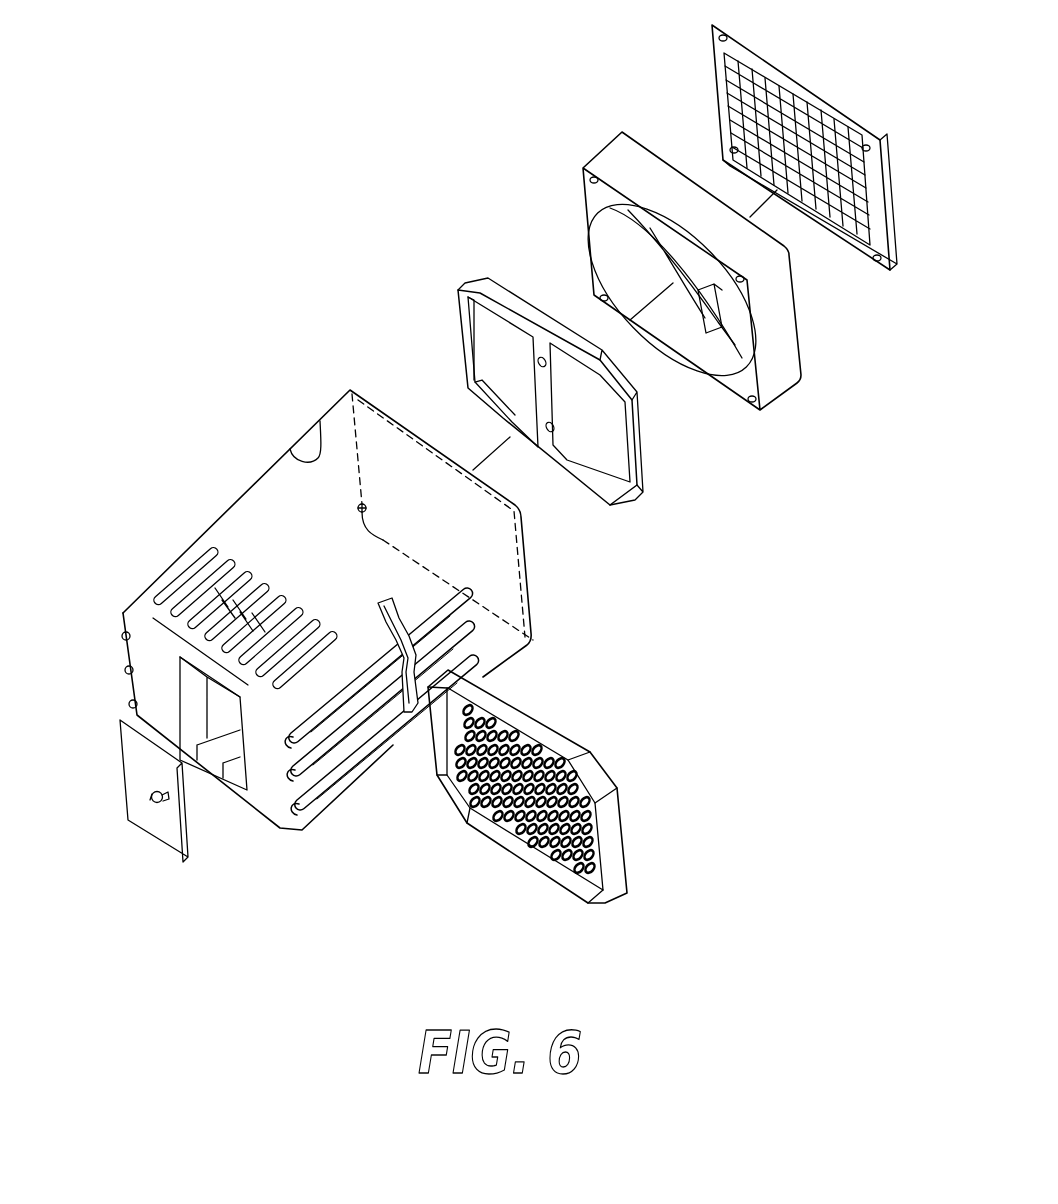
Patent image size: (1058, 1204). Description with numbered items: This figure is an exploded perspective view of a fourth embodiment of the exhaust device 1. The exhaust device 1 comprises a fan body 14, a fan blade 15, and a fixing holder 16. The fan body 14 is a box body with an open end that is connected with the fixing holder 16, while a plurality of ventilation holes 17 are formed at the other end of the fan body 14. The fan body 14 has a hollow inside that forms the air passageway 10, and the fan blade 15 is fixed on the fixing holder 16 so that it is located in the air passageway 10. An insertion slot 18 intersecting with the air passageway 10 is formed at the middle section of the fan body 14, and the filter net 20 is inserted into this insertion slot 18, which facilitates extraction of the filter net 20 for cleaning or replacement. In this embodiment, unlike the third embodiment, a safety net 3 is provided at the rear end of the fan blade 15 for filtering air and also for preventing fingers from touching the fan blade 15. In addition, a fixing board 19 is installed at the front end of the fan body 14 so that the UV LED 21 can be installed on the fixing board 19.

The exhaust device 1 is at (257, 435).
The safety net 3 is at (722, 96).
The air passageway 10 is at (385, 450).
The fan body 14 is at (282, 513).
The fan blade 15 is at (609, 160).
The fixing holder 16 is at (633, 450).
The ventilation holes 17 is at (183, 590).
The insertion slot 18 is at (408, 742).
The fixing board 19 is at (172, 835).
The filter net 20 is at (540, 732).
The UV LED 21 is at (150, 812).